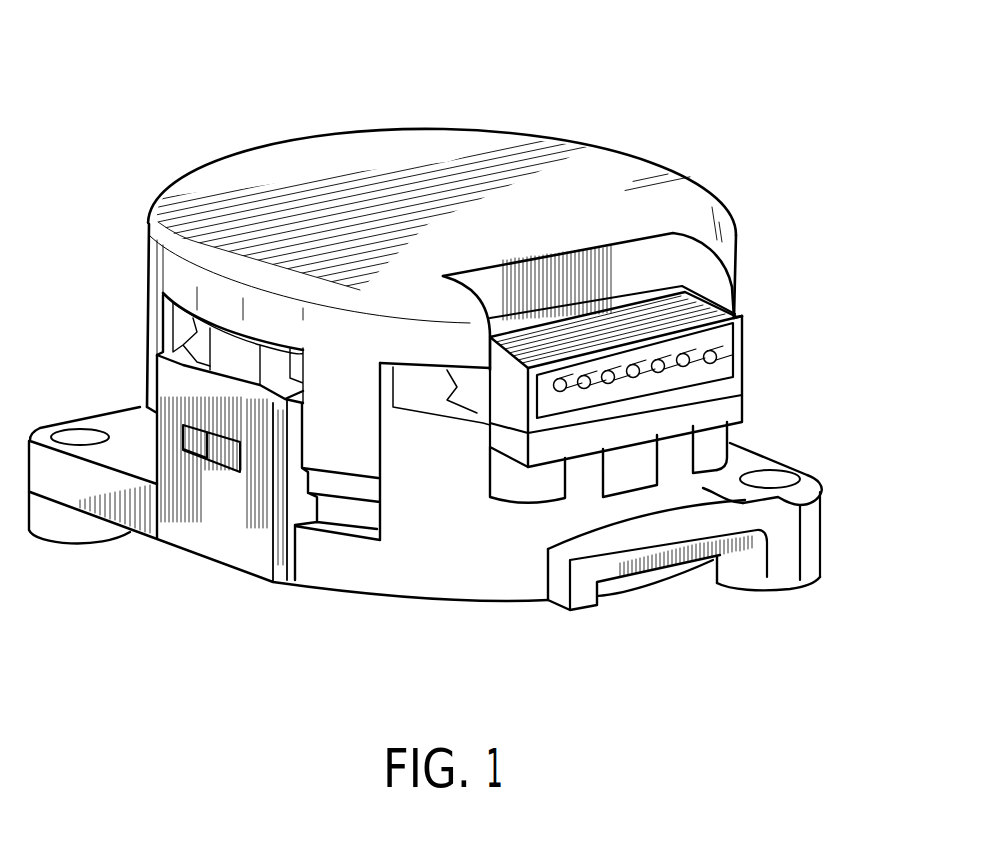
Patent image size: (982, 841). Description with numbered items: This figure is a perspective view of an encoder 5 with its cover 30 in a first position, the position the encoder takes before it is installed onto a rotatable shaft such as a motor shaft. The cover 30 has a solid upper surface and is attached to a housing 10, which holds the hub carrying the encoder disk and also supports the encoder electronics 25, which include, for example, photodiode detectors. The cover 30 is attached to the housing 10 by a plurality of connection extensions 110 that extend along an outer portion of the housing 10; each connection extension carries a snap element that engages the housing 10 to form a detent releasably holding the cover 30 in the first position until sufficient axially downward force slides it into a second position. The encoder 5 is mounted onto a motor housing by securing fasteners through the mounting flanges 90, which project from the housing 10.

The encoder 5 is at (431, 338).
The housing 10 is at (425, 478).
The encoder electronics 25 is at (725, 404).
The cover 30 is at (663, 191).
The mounting flanges 90 is at (73, 432).
The connection extensions 110 is at (368, 425).